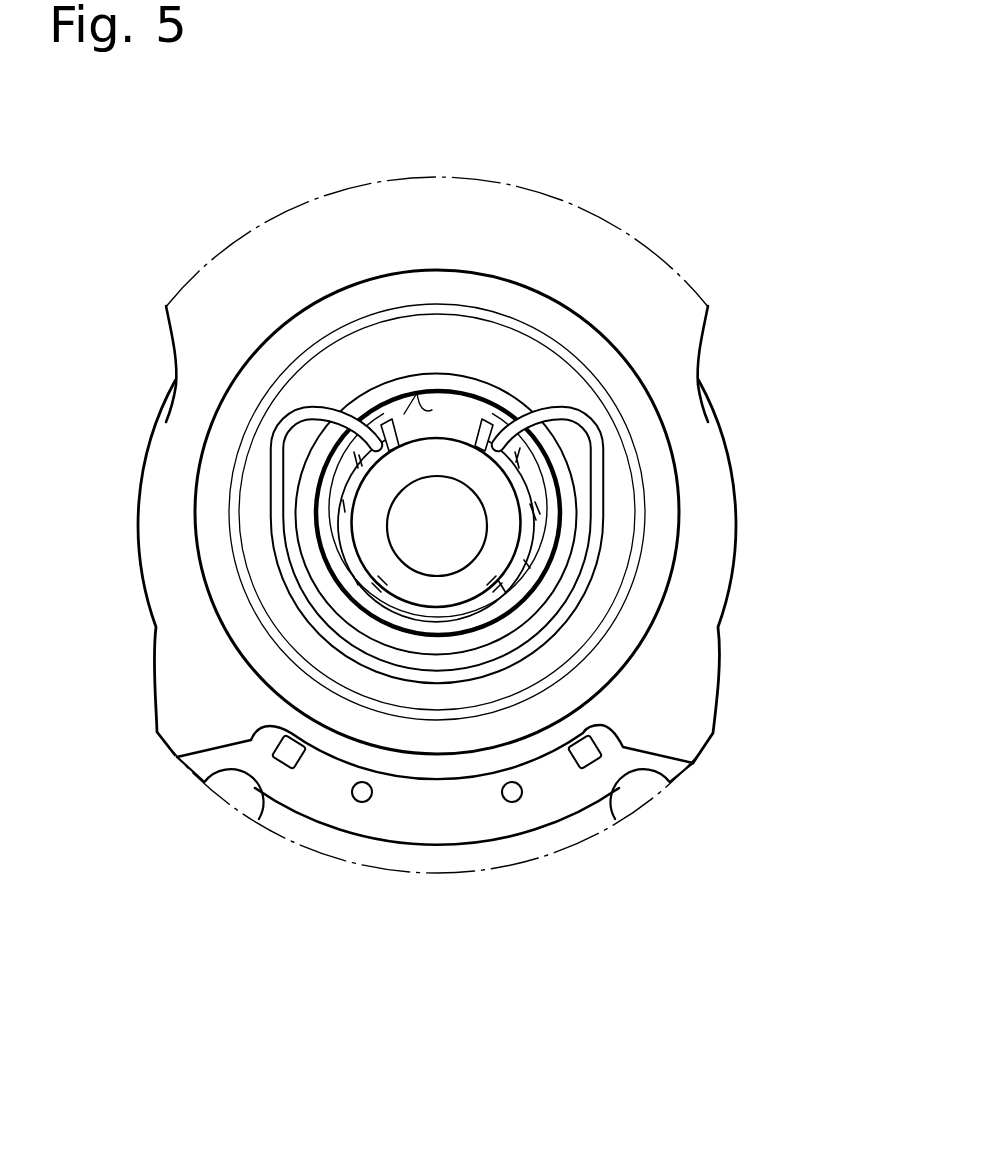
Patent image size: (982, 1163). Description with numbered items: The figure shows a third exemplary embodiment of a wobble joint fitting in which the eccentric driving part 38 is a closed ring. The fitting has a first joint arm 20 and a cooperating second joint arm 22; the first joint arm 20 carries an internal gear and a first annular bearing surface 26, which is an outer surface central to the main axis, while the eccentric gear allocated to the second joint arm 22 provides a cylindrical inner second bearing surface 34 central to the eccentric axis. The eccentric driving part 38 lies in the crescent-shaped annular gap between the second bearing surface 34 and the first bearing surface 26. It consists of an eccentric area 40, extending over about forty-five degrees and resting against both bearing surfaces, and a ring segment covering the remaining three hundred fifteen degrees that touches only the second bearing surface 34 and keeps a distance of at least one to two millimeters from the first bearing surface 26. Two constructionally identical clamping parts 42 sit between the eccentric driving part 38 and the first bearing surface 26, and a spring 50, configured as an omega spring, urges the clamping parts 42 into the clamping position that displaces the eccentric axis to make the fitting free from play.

The first joint arm 20 is at (452, 814).
The second joint arm 22 is at (278, 274).
The first annular bearing surface 26 is at (518, 495).
The second bearing surface 34 is at (432, 413).
The eccentric driving part 38 is at (512, 392).
The eccentric area 40 is at (458, 396).
The clamping parts 42 is at (345, 479).
The spring 50 is at (574, 608).